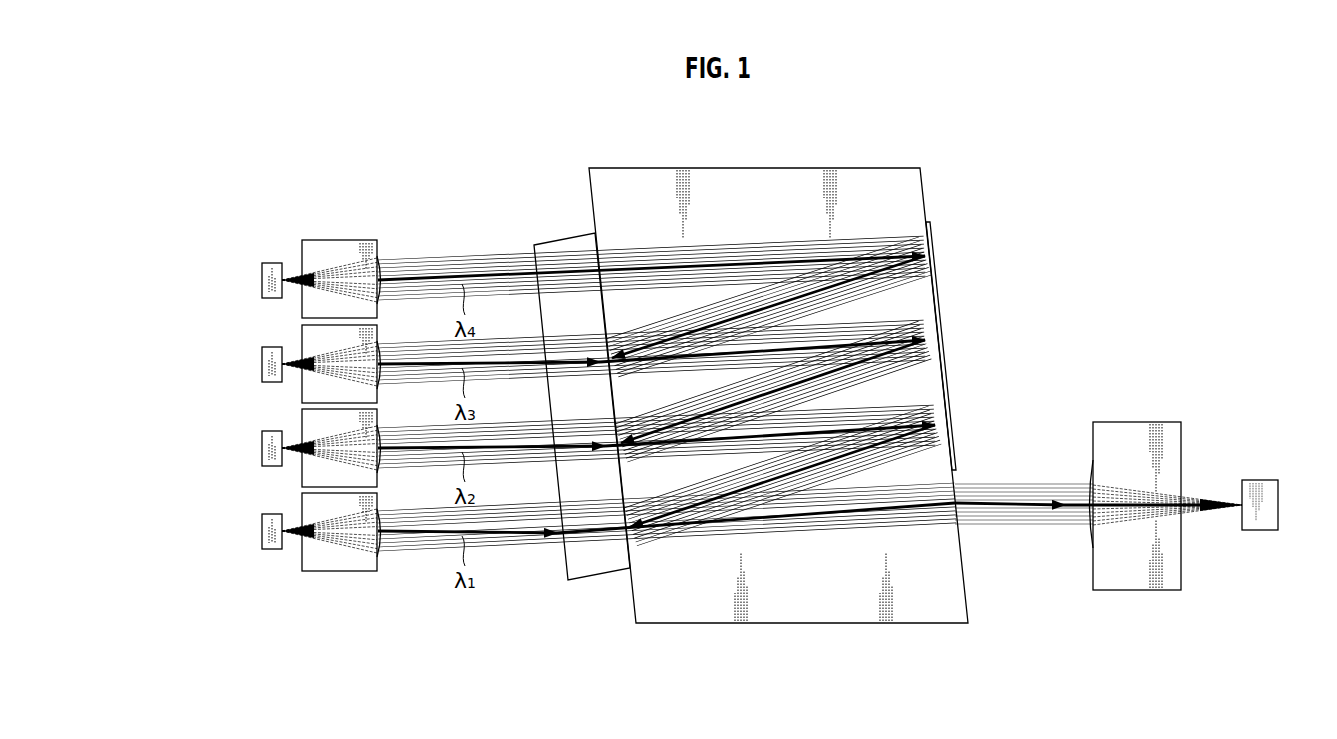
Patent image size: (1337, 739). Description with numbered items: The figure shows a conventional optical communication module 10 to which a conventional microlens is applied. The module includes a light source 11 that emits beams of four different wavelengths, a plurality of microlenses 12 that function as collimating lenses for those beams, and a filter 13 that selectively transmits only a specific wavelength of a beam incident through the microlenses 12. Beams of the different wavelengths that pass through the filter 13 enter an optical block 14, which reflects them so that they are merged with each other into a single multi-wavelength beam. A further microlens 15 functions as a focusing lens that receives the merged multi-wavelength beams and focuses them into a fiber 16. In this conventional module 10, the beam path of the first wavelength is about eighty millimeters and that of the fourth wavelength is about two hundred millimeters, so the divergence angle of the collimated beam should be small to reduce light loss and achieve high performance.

The optical communication module 10 is at (320, 157).
The light source 11 is at (259, 281).
The microlens 12 is at (338, 305).
The filter 13 is at (591, 571).
The optical block 14 is at (800, 605).
The microlens 15 is at (1135, 585).
The fiber 16 is at (1260, 532).